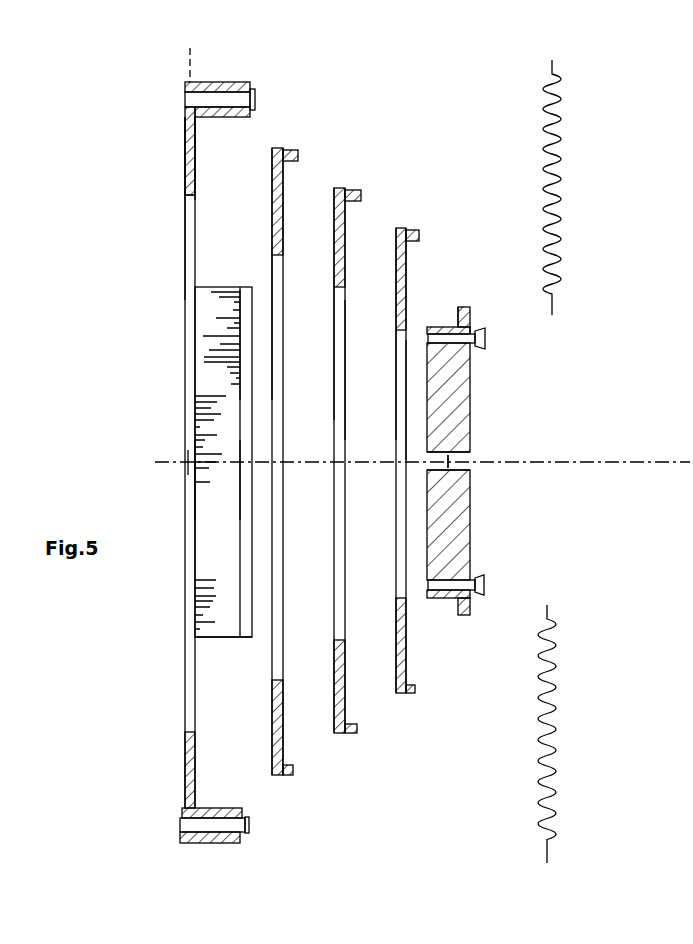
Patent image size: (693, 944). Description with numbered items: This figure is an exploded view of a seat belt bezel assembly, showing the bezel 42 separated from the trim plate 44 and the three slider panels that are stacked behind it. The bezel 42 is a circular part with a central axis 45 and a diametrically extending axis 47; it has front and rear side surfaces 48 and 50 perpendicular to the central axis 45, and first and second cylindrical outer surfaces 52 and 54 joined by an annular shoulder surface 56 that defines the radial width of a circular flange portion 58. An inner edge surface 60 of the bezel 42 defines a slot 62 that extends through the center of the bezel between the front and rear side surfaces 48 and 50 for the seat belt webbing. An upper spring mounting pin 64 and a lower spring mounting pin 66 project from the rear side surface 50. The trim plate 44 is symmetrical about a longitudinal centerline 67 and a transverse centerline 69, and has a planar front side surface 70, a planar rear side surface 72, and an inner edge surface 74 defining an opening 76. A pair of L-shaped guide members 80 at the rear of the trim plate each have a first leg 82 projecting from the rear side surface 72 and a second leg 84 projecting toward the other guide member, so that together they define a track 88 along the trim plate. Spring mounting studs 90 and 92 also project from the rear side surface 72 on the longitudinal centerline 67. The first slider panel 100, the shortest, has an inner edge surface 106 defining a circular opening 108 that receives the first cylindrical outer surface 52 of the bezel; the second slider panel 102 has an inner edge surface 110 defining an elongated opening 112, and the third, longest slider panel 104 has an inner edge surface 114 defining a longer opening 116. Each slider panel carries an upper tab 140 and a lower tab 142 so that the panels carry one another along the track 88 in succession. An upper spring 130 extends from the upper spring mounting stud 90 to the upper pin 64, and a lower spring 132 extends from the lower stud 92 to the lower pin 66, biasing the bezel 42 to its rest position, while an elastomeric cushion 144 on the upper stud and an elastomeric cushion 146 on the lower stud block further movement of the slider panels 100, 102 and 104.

The bezel 42 is at (473, 407).
The trim plate 44 is at (183, 124).
The central axis 45 is at (590, 456).
The diametrically extending axis 47 is at (460, 478).
The front side surface 48 is at (430, 580).
The rear side surface 50 is at (470, 548).
The first cylindrical outer surface 52 is at (437, 326).
The second cylindrical outer surface 54 is at (468, 307).
The annular shoulder surface 56 is at (457, 307).
The circular flange portion 58 is at (472, 316).
The inner edge surface 60 is at (465, 457).
The slot 62 is at (474, 463).
The upper spring mounting pin 64 is at (486, 338).
The lower spring mounting pin 66 is at (485, 586).
The longitudinal centerline 67 is at (190, 62).
The transverse centerline 69 is at (185, 462).
The front side surface 70 is at (184, 151).
The rear side surface 72 is at (197, 167).
The inner edge surface 74 is at (184, 205).
The opening 76 is at (183, 228).
The guide member 80 is at (220, 285).
The first leg 82 is at (205, 480).
The second leg 84 is at (243, 488).
The track 88 is at (220, 641).
The upper spring mounting stud 90 is at (238, 97).
The lower spring mounting stud 92 is at (230, 838).
The first slider panel 100 is at (400, 226).
The second slider panel 102 is at (338, 186).
The third slider panel 104 is at (275, 146).
The inner edge surface 106 is at (398, 331).
The circular opening 108 is at (399, 432).
The inner edge surface 110 is at (337, 290).
The opening 112 is at (337, 415).
The inner edge surface 114 is at (273, 254).
The opening 116 is at (271, 317).
The upper spring 130 is at (558, 98).
The lower spring 132 is at (558, 826).
The upper tab 140 is at (292, 156).
The lower tab 142 is at (294, 770).
The elastomeric cushion 144 is at (212, 83).
The elastomeric cushion 146 is at (243, 814).